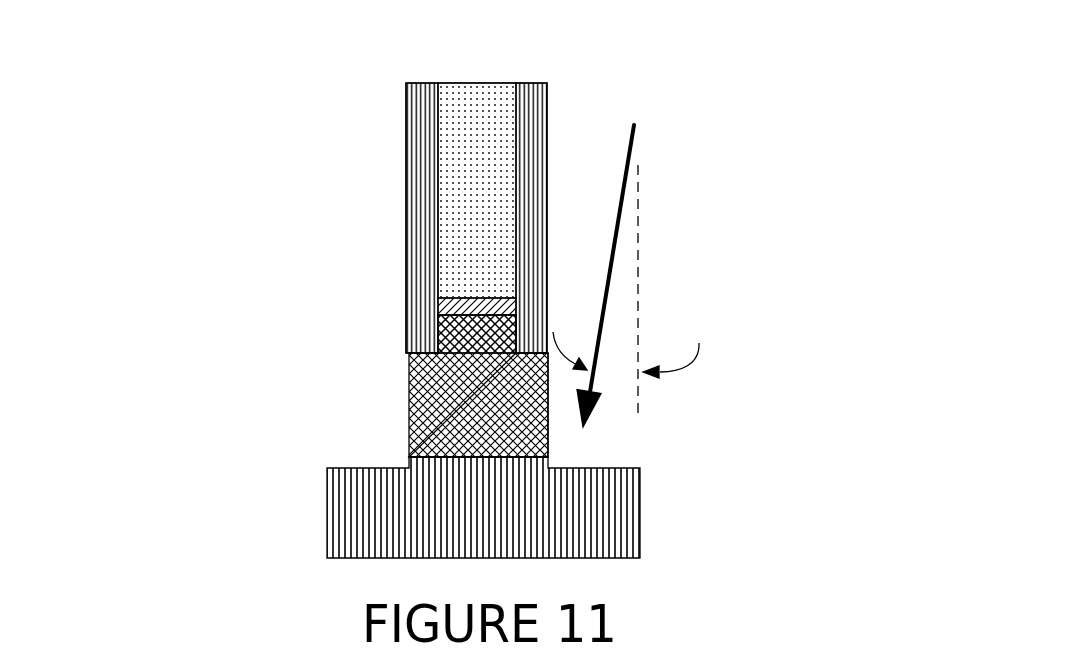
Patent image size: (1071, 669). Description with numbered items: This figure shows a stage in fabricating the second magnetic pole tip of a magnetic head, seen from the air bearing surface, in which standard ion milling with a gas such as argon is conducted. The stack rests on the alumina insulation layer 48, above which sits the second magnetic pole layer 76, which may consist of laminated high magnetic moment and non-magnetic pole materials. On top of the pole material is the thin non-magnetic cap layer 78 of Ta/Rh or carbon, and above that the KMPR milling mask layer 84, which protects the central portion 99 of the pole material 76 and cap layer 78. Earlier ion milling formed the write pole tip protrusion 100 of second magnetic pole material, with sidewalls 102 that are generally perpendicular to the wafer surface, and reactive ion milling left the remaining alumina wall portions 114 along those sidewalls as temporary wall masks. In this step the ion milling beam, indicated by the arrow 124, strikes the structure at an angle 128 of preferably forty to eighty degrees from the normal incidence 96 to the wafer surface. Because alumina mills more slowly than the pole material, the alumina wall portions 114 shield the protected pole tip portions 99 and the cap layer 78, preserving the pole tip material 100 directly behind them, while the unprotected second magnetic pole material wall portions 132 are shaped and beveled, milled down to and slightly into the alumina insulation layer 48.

The alumina insulation layer 48 is at (327, 495).
The second magnetic pole layer 76 is at (440, 436).
The cap layer 78 is at (438, 302).
The KMPR milling mask layer 84 is at (483, 82).
The normal incidence arrow 96 is at (641, 243).
The protected second magnetic pole tip portion 99 is at (395, 275).
The write pole tip protrusion 100 is at (488, 325).
The sidewalls 102 is at (438, 341).
The remaining alumina wall portions 114 is at (438, 316).
The ion milling beam direction arrow 124 is at (613, 237).
The ion milling angle 128 is at (662, 372).
The unprotected second magnetic pole material wall portions 132 is at (409, 404).